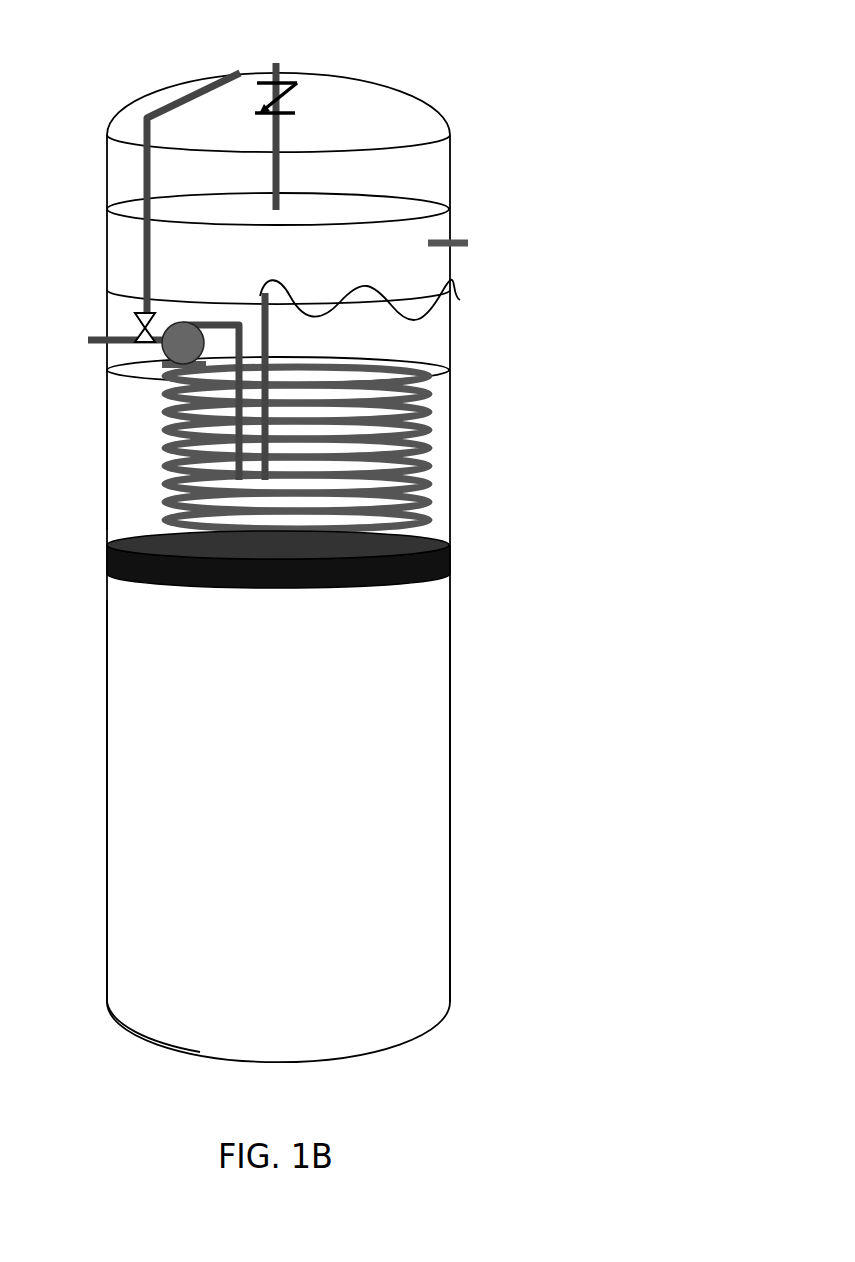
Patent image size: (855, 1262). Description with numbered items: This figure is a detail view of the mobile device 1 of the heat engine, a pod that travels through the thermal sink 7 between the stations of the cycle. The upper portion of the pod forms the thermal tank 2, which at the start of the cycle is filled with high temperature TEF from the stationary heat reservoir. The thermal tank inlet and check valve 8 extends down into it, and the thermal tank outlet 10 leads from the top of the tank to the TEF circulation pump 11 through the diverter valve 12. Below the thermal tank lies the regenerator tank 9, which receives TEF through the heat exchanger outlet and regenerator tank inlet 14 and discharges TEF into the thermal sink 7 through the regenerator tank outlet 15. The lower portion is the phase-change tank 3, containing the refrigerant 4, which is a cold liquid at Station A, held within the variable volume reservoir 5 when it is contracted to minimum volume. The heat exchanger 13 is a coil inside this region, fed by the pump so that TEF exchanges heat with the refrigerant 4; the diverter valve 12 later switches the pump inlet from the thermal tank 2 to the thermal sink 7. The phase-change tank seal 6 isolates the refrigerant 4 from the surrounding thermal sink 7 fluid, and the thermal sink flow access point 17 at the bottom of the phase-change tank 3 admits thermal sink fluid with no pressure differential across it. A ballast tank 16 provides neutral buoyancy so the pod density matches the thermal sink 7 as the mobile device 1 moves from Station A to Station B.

The mobile device 1 is at (589, 46).
The thermal tank 2 is at (107, 135).
The phase-change tank 3 is at (450, 666).
The refrigerant 4 is at (117, 403).
The variable volume reservoir 5 is at (103, 470).
The phase-change tank seal 6 is at (105, 558).
The thermal sink 7 is at (625, 1104).
The thermal tank inlet and check valve 8 is at (276, 62).
The regenerator tank 9 is at (118, 245).
The thermal tank outlet 10 is at (240, 73).
The TEF circulation pump 11 is at (120, 374).
The diverter valve 12 is at (133, 330).
The heat exchanger 13 is at (428, 466).
The heat exchanger outlet and regenerator tank inlet 14 is at (450, 304).
The regenerator tank outlet 15 is at (463, 233).
The ballast tank 16 is at (458, 334).
The thermal sink flow access point 17 is at (136, 1038).